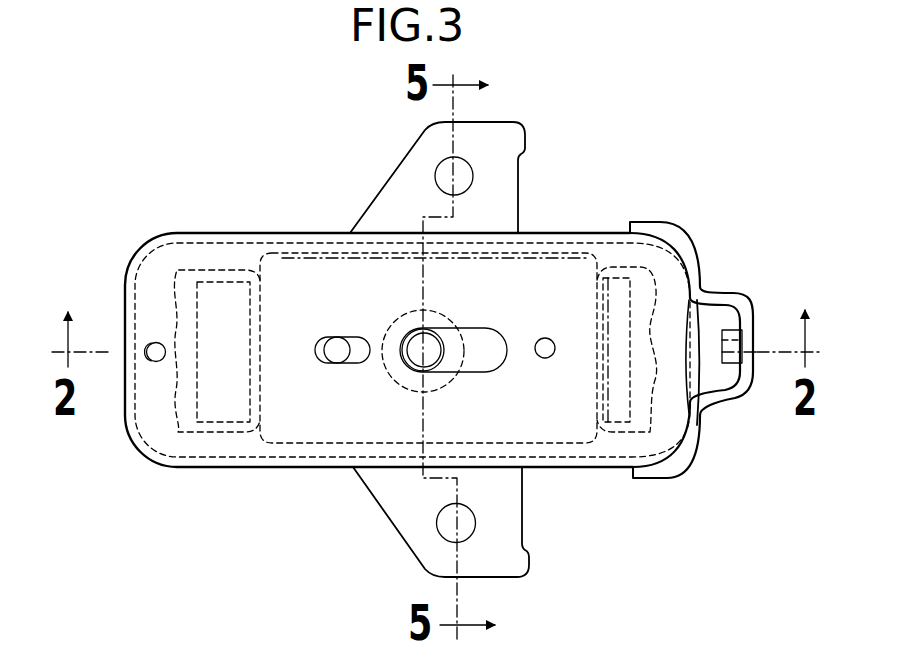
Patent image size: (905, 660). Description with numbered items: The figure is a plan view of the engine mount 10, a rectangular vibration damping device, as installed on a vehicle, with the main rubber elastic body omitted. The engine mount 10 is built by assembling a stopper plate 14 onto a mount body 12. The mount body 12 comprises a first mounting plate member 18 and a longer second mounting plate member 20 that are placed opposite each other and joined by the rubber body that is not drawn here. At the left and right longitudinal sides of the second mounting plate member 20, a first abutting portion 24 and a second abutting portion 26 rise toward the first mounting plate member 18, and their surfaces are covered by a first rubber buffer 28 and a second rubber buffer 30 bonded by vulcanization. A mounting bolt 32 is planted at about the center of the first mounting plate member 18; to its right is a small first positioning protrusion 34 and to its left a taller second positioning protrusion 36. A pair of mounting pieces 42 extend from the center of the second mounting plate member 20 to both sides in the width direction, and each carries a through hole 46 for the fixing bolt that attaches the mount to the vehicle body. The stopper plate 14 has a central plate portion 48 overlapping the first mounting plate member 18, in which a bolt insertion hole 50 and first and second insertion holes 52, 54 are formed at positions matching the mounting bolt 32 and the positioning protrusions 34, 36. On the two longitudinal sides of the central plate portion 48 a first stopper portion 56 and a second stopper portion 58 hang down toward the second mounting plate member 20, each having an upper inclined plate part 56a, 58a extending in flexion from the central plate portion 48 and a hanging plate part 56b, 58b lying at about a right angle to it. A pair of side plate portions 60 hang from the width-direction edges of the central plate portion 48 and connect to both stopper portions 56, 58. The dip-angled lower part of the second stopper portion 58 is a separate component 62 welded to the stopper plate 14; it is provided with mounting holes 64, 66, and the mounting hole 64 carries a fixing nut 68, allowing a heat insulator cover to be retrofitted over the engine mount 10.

The engine mount 10 is at (680, 120).
The mount body 12 is at (312, 246).
The stopper plate 14 is at (169, 227).
The first mounting plate member 18 is at (503, 246).
The second mounting plate member 20 is at (525, 113).
The first abutting portion 24 is at (222, 413).
The second abutting portion 26 is at (627, 413).
The first rubber buffer 28 is at (180, 432).
The second rubber buffer 30 is at (662, 443).
The mounting bolt 32 is at (415, 350).
The first positioning protrusion 34 is at (547, 340).
The second positioning protrusion 36 is at (337, 350).
The mounting piece 42 is at (410, 160).
The through hole 46 is at (468, 184).
The central plate portion 48 is at (382, 430).
The bolt insertion hole 50 is at (451, 366).
The first insertion hole 52 is at (546, 357).
The second insertion hole 54 is at (333, 357).
The first stopper portion 56 is at (158, 336).
The upper inclined plate part 56a is at (150, 303).
The hanging plate part 56b is at (132, 340).
The second stopper portion 58 is at (705, 300).
The upper inclined plate part 58a is at (667, 297).
The hanging plate part 58b is at (689, 415).
The side plate portion 60 is at (272, 243).
The separate component 62 is at (711, 424).
The mounting hole 64 is at (745, 340).
The mounting hole 66 is at (732, 363).
The fixing nut 68 is at (735, 398).